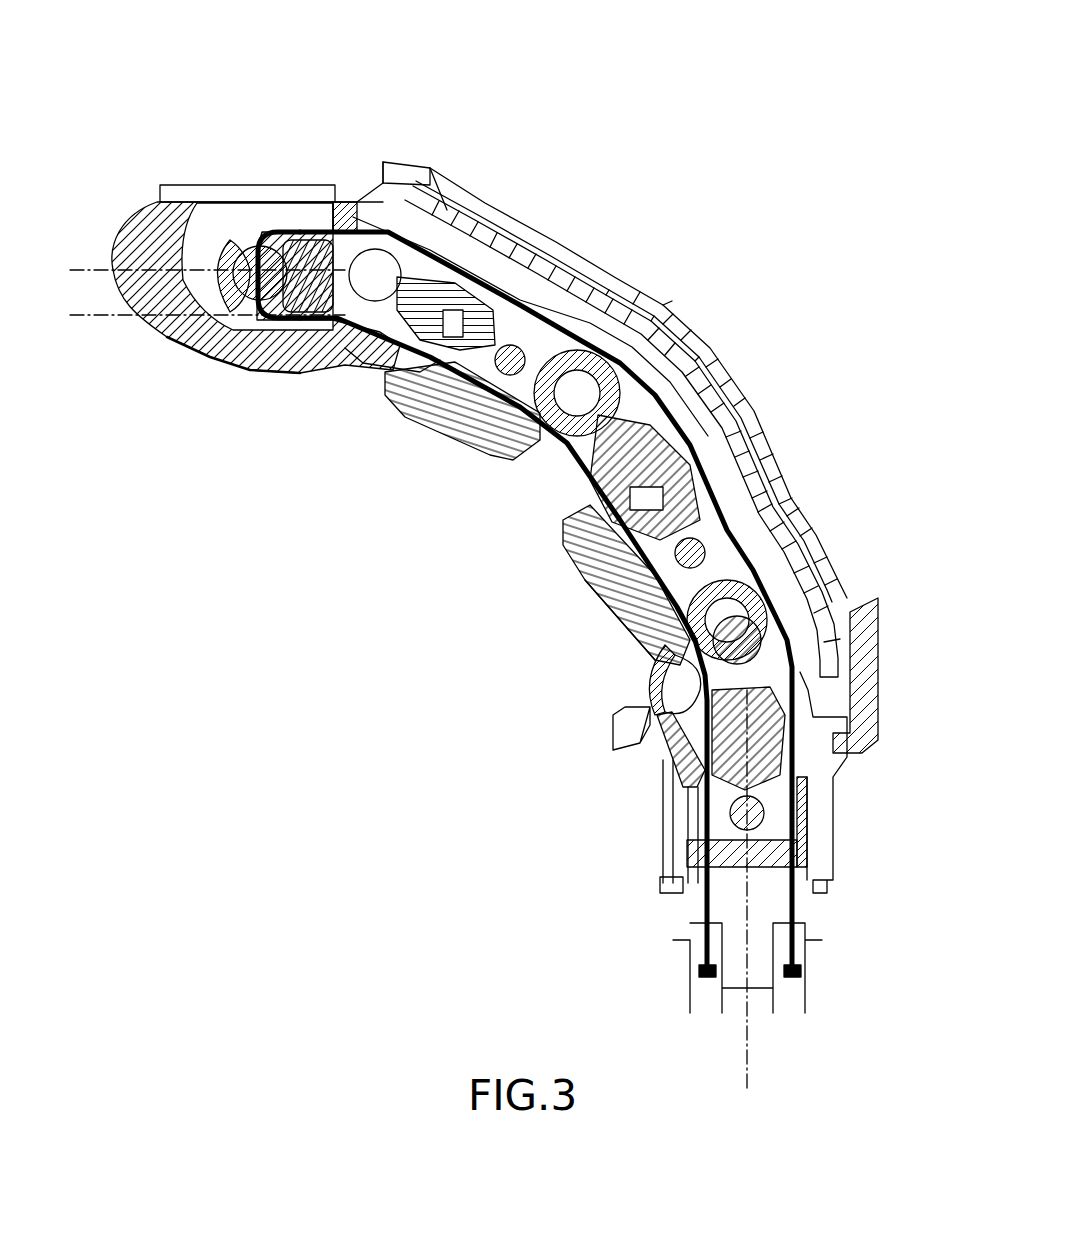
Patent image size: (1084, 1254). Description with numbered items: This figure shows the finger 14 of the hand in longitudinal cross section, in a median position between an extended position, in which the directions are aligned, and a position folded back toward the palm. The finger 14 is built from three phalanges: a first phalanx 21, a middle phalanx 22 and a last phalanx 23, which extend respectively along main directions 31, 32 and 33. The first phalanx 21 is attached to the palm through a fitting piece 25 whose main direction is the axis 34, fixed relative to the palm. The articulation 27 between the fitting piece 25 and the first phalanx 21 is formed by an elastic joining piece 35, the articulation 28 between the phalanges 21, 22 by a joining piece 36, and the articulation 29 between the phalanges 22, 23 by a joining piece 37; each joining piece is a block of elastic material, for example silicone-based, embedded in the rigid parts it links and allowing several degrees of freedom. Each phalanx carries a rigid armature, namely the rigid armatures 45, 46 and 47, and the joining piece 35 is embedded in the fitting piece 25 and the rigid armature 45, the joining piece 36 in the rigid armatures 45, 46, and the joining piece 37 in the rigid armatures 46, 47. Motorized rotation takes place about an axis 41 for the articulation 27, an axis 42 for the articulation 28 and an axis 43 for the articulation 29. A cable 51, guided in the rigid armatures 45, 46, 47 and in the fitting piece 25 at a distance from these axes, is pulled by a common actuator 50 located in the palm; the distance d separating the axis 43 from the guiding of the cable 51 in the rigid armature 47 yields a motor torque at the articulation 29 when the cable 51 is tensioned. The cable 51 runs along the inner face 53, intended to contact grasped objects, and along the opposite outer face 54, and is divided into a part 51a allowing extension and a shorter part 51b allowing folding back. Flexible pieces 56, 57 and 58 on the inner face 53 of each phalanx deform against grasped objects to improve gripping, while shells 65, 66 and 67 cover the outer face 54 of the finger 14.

The finger 14 is at (245, 636).
The first phalanx 21 is at (828, 357).
The phalanx 22 is at (635, 150).
The phalanx 23 is at (262, 112).
The fitting piece 25 is at (857, 778).
The articulation 27 is at (850, 585).
The articulation 28 is at (690, 296).
The articulation 29 is at (360, 105).
The main direction 31 is at (702, 573).
The main direction 32 is at (537, 368).
The main direction 33 is at (95, 268).
The axis 34 is at (750, 1052).
The joining piece 35 is at (727, 617).
The joining piece 36 is at (477, 455).
The joining piece 37 is at (390, 282).
The axis 41 is at (750, 663).
The axis 42 is at (533, 480).
The axis 43 is at (357, 270).
The rigid armature 45 is at (633, 473).
The rigid armature 46 is at (447, 297).
The rigid armature 47 is at (392, 213).
The common actuator 50 is at (825, 985).
The cable 51 is at (537, 320).
The part of the cable 51a is at (797, 910).
The part of the cable 51b is at (702, 905).
The inner face 53 is at (467, 618).
The outer face 54 is at (815, 205).
The flexible piece 56 is at (620, 598).
The flexible piece 57 is at (447, 423).
The flexible piece 58 is at (230, 347).
The shell 65 is at (693, 340).
The shell 66 is at (497, 240).
The shell 67 is at (303, 188).
The distance d is at (82, 273).